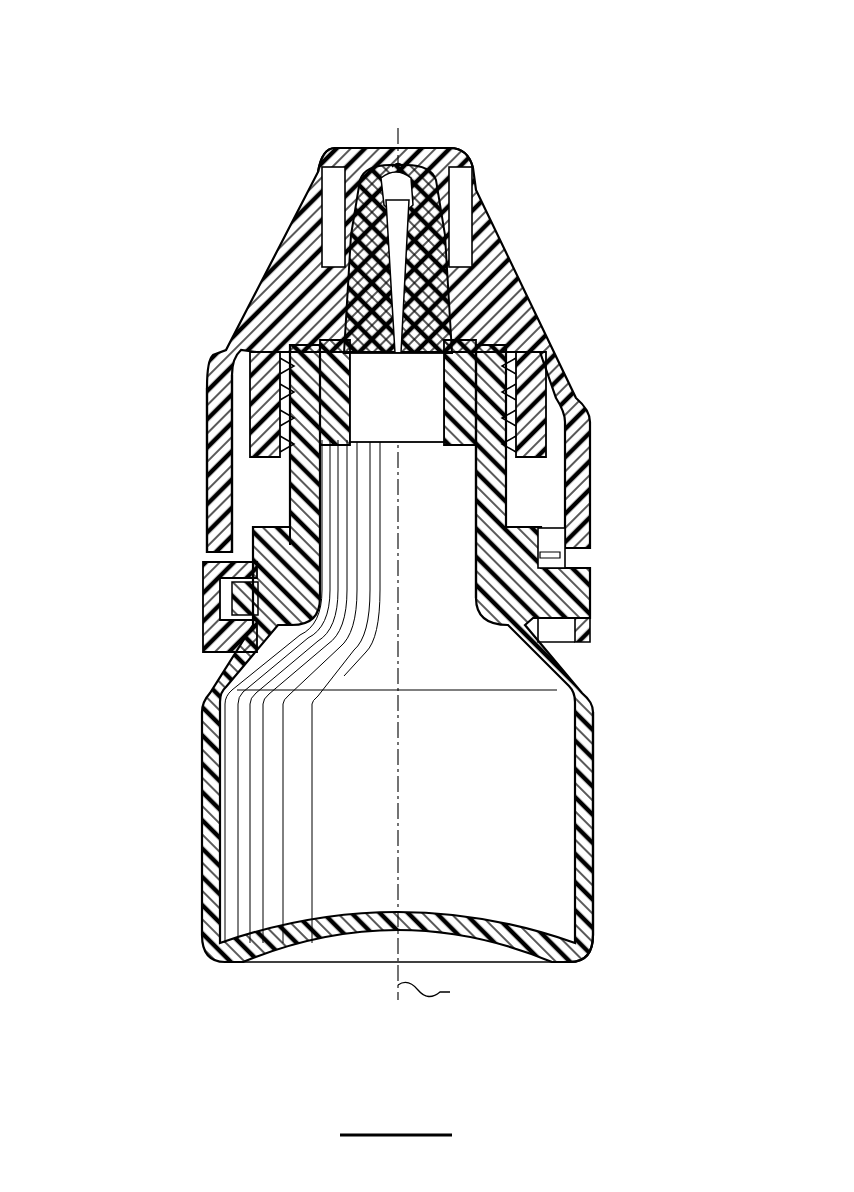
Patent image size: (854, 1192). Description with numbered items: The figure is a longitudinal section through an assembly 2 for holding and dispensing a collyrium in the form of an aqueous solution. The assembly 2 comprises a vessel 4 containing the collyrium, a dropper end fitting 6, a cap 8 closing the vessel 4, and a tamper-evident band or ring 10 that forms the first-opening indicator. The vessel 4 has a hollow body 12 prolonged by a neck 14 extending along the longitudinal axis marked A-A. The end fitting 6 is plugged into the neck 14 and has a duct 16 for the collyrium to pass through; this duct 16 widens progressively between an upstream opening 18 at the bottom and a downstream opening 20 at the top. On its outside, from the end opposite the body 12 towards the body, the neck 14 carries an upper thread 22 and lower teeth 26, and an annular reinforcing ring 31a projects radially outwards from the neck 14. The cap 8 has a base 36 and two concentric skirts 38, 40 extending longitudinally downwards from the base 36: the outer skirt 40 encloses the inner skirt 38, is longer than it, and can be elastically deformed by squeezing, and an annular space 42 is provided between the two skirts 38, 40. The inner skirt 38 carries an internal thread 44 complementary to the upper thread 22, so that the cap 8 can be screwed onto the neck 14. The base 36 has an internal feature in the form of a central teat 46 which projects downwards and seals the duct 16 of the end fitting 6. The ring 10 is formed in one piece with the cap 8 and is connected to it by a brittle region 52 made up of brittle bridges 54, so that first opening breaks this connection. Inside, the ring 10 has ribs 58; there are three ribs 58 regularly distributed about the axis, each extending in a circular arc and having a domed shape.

The assembly 2 is at (158, 102).
The vessel 4 is at (598, 784).
The dropper end fitting 6 is at (338, 233).
The cap 8 is at (550, 328).
The tamper-evident band or ring 10 is at (200, 612).
The hollow body 12 is at (594, 886).
The neck 14 is at (500, 494).
The duct 16 is at (402, 237).
The upstream opening 18 is at (392, 356).
The downstream opening 20 is at (444, 160).
The upper thread 22 is at (270, 468).
The lower teeth 26 is at (588, 593).
The annular reinforcing ring 31a is at (275, 530).
The base 36 is at (333, 152).
The inner skirt 38 is at (524, 396).
The outer skirt 40 is at (567, 545).
The annular space 42 is at (242, 410).
The internal thread 44 is at (522, 448).
The central teat 46 is at (440, 205).
The brittle region 52 is at (190, 563).
The brittle bridges 54 is at (552, 557).
The ribs 58 is at (268, 637).